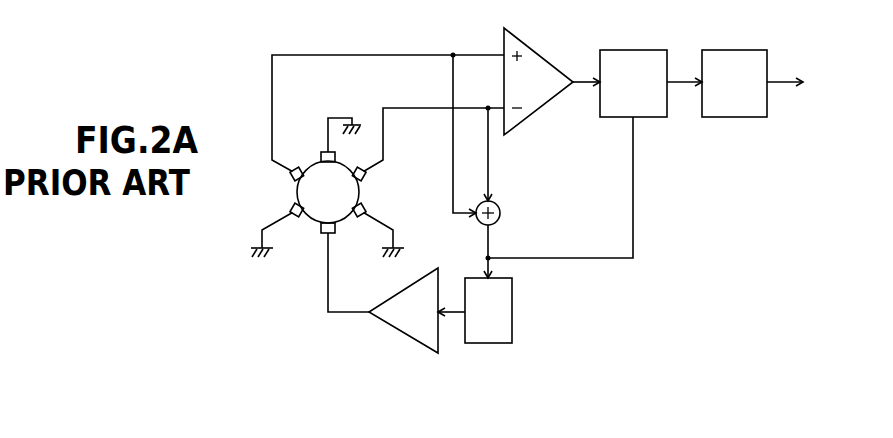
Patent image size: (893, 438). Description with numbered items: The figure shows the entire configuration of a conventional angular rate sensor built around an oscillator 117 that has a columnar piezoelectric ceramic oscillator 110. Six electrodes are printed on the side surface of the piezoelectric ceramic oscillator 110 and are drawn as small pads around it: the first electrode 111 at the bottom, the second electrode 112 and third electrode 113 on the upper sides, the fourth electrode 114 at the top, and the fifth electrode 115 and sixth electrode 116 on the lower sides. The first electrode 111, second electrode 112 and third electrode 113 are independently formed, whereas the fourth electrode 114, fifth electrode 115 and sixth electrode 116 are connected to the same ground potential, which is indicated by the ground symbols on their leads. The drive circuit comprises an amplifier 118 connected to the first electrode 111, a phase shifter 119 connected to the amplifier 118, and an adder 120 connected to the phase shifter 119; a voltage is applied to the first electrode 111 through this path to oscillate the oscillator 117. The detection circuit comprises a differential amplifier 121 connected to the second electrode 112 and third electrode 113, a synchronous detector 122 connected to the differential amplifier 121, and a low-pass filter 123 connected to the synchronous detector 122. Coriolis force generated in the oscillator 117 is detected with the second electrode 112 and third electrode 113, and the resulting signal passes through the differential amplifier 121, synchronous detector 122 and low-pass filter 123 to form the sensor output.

The piezoelectric ceramic oscillator 110 is at (310, 224).
The first electrode 111 is at (333, 233).
The second electrode 112 is at (371, 175).
The third electrode 113 is at (287, 176).
The fourth electrode 114 is at (322, 152).
The fifth electrode 115 is at (287, 211).
The sixth electrode 116 is at (372, 211).
The oscillator 117 is at (275, 298).
The amplifier 118 is at (392, 327).
The phase shifter 119 is at (482, 345).
The adder 120 is at (501, 213).
The differential amplifier 121 is at (545, 55).
The synchronous detector 122 is at (626, 48).
The low-pass filter 123 is at (712, 48).